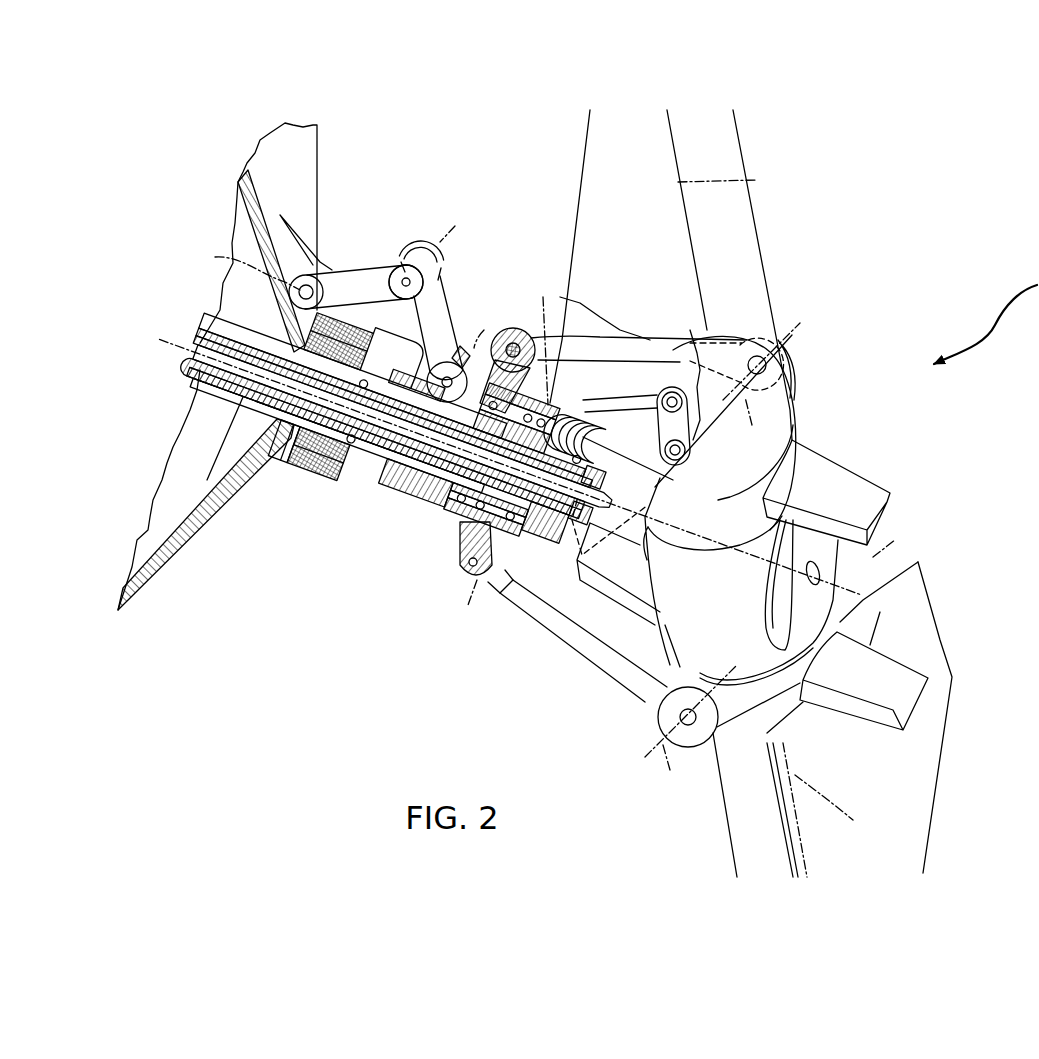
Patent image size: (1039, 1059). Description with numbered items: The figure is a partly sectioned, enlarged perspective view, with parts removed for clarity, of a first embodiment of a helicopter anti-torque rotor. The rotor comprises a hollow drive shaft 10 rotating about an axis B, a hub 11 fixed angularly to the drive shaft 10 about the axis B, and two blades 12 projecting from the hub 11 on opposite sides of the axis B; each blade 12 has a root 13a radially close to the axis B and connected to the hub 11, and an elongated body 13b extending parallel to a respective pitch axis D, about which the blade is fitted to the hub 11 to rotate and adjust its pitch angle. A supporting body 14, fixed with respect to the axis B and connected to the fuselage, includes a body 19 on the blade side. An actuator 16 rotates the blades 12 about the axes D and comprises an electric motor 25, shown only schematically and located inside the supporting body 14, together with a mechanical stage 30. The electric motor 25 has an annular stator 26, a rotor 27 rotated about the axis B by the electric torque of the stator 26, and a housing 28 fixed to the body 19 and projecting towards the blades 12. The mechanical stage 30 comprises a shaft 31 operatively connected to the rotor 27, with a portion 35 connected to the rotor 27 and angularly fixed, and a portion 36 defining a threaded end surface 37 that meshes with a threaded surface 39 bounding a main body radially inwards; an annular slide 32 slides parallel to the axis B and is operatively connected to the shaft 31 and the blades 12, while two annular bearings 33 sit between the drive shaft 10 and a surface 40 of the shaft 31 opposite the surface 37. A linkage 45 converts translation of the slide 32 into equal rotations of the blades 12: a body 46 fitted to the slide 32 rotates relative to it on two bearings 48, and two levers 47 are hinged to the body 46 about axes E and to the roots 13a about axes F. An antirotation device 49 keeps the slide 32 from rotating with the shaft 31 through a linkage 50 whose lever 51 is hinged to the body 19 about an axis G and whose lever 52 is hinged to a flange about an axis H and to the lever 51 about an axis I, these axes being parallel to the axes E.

The drive shaft 10 is at (197, 377).
The hub 11 is at (702, 600).
The blades 12 is at (779, 284).
The root 13a is at (758, 477).
The elongated body 13b is at (607, 180).
The supporting body 14 is at (211, 522).
The actuator 16 is at (405, 484).
The body 19 is at (248, 215).
The electric motor 25 is at (321, 499).
The stator 26 is at (330, 470).
The rotor 27 is at (345, 337).
The housing 28 is at (386, 344).
The mechanical stage 30 is at (431, 497).
The shaft 31 is at (392, 460).
The slide 32 is at (517, 565).
The annular bearings 33 is at (352, 448).
The portion 35 is at (297, 430).
The portion 36 is at (548, 514).
The threaded end surface 37 is at (411, 381).
The threaded surface 39 is at (577, 480).
The surface 40 is at (572, 505).
The linkage 45 is at (514, 320).
The body 46 is at (466, 555).
The levers 47 is at (650, 350).
The bearings 48 is at (496, 397).
The antirotation device 49 is at (418, 235).
The linkage 50 is at (447, 271).
The lever 51 is at (378, 285).
The lever 52 is at (465, 345).
The axis G is at (247, 267).
The axis I is at (450, 221).
The axis H is at (488, 329).
The axes E is at (506, 446).
The axes F is at (722, 555).
The axes D is at (775, 521).
The axis B is at (535, 466).